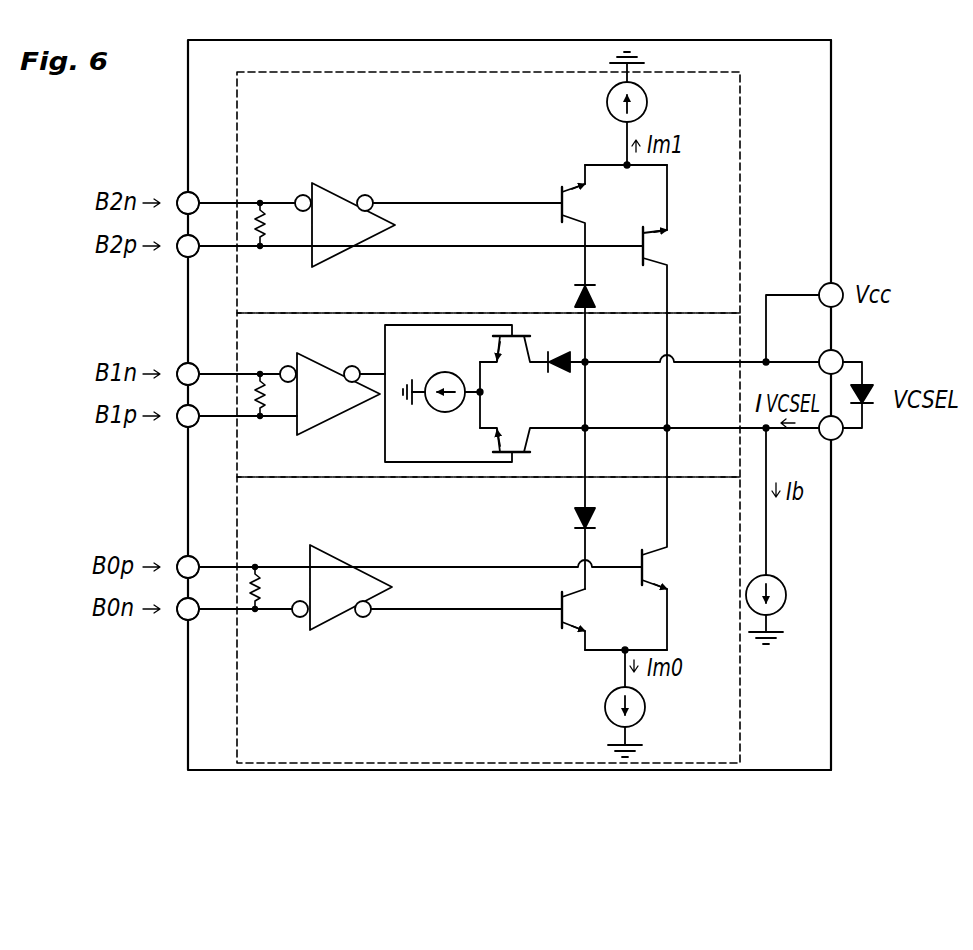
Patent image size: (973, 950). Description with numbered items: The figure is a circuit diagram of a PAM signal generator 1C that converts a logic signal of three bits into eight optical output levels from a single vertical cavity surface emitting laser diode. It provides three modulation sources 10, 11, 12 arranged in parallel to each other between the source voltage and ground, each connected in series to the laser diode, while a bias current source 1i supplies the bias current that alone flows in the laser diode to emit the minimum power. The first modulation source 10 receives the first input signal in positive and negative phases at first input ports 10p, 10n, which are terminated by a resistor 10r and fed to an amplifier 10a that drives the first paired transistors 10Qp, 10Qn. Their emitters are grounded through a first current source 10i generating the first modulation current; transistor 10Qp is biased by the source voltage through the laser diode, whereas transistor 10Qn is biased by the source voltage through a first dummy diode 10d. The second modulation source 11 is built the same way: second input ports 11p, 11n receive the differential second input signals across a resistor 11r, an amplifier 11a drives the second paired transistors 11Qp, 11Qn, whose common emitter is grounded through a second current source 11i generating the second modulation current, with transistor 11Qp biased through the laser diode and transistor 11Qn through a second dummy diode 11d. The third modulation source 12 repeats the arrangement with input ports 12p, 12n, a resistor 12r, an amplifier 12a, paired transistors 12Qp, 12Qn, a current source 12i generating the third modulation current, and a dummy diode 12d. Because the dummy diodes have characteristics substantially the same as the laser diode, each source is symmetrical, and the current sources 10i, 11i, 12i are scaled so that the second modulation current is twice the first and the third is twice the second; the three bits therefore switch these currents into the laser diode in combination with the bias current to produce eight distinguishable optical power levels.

The PAM signal generator 1C is at (890, 121).
The third modulation source 12 is at (237, 119).
The second modulation source 11 is at (237, 321).
The first modulation source 10 is at (237, 499).
The negative-phase input port of third modulation source 12n is at (181, 195).
The positive-phase input port of third modulation source 12p is at (181, 254).
The resistor of third modulation source 12r is at (269, 220).
The amplifier of third modulation source 12a is at (340, 202).
The negative-phase transistor of third modulation source 12Qn is at (583, 210).
The positive-phase transistor of third modulation source 12Qp is at (657, 247).
The third current source 12i is at (648, 102).
The third dummy diode 12d is at (578, 296).
The negative-phase second input port 11n is at (181, 366).
The positive-phase second input port 11p is at (181, 424).
The second resistor 11r is at (271, 396).
The second amplifier 11a is at (325, 373).
The second current source 11i is at (445, 372).
The negative-phase second transistor 11Qn is at (511, 360).
The positive-phase second transistor 11Qp is at (506, 462).
The second dummy diode 11d is at (560, 350).
The bias current source 1i is at (779, 581).
The positive-phase first input port 10p is at (181, 559).
The negative-phase first input port 10n is at (181, 617).
The first resistor 10r is at (267, 590).
The first amplifier 10a is at (333, 567).
The first dummy diode 10d is at (577, 518).
The negative-phase first transistor 10Qn is at (583, 608).
The positive-phase first transistor 10Qp is at (655, 566).
The first current source 10i is at (605, 709).